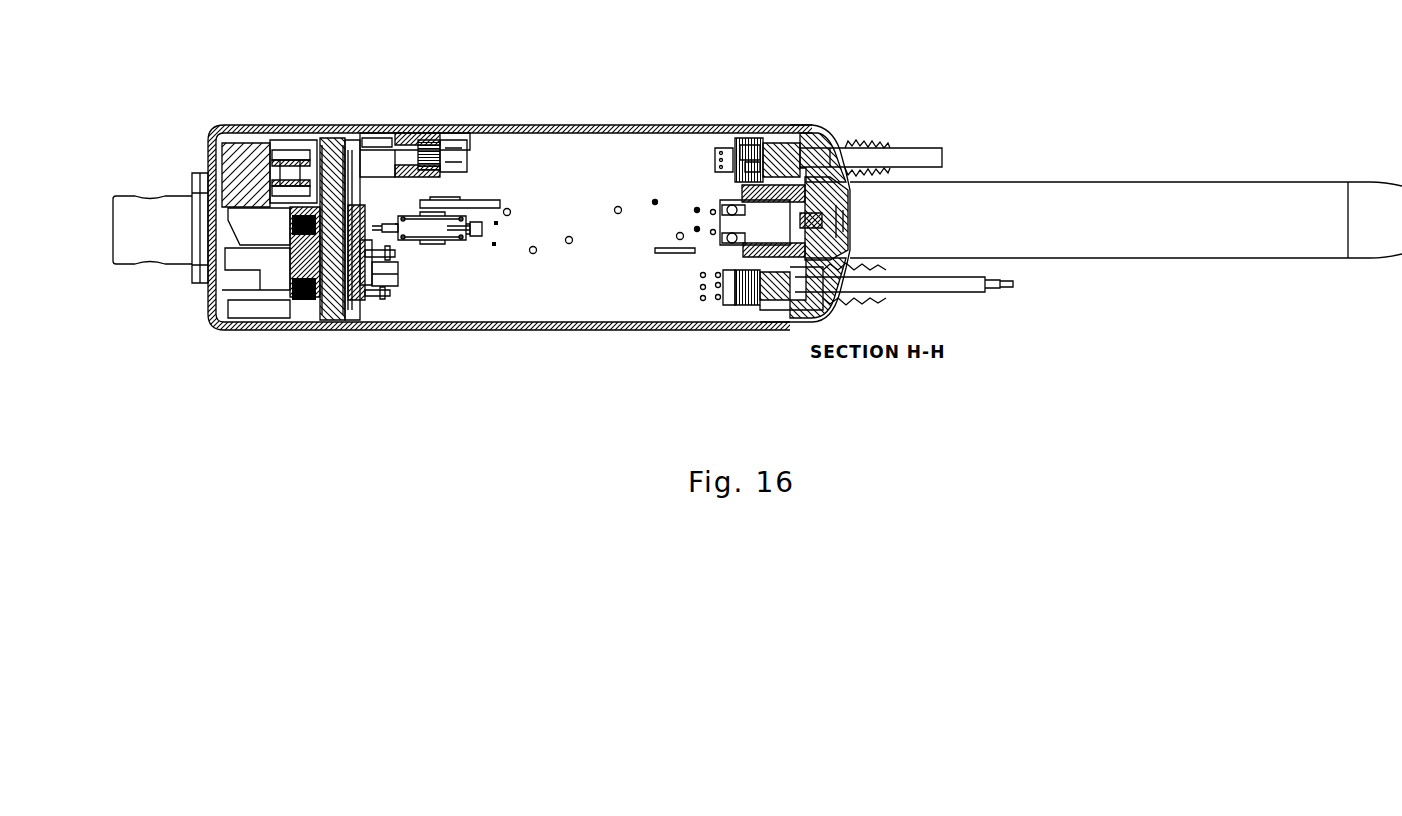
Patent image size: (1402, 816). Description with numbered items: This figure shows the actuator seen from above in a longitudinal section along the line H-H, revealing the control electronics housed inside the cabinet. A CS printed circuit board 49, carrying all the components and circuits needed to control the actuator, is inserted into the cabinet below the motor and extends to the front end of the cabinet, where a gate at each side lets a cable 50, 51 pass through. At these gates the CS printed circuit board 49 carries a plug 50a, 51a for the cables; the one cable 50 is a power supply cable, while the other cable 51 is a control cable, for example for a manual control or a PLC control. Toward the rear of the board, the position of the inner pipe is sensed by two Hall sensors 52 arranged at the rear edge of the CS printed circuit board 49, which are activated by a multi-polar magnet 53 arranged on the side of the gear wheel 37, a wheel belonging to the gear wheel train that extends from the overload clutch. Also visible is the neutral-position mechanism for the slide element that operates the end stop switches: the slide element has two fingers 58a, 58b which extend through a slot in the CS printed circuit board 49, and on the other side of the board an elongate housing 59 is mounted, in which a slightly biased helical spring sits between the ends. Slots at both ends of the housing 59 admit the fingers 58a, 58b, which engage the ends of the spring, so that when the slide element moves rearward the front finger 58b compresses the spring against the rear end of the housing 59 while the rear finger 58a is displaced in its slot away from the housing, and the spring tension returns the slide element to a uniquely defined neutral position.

The gear wheel 37 is at (332, 320).
The CS printed circuit board 49 is at (637, 277).
The power supply cable 50 is at (960, 287).
The plug 50a is at (752, 317).
The control cable 51 is at (863, 160).
The plug 51a is at (738, 127).
The Hall sensors 52 is at (388, 282).
The multi-polar magnet 53 is at (360, 292).
The finger 58a is at (405, 240).
The finger 58b is at (475, 230).
The elongate housing 59 is at (430, 226).